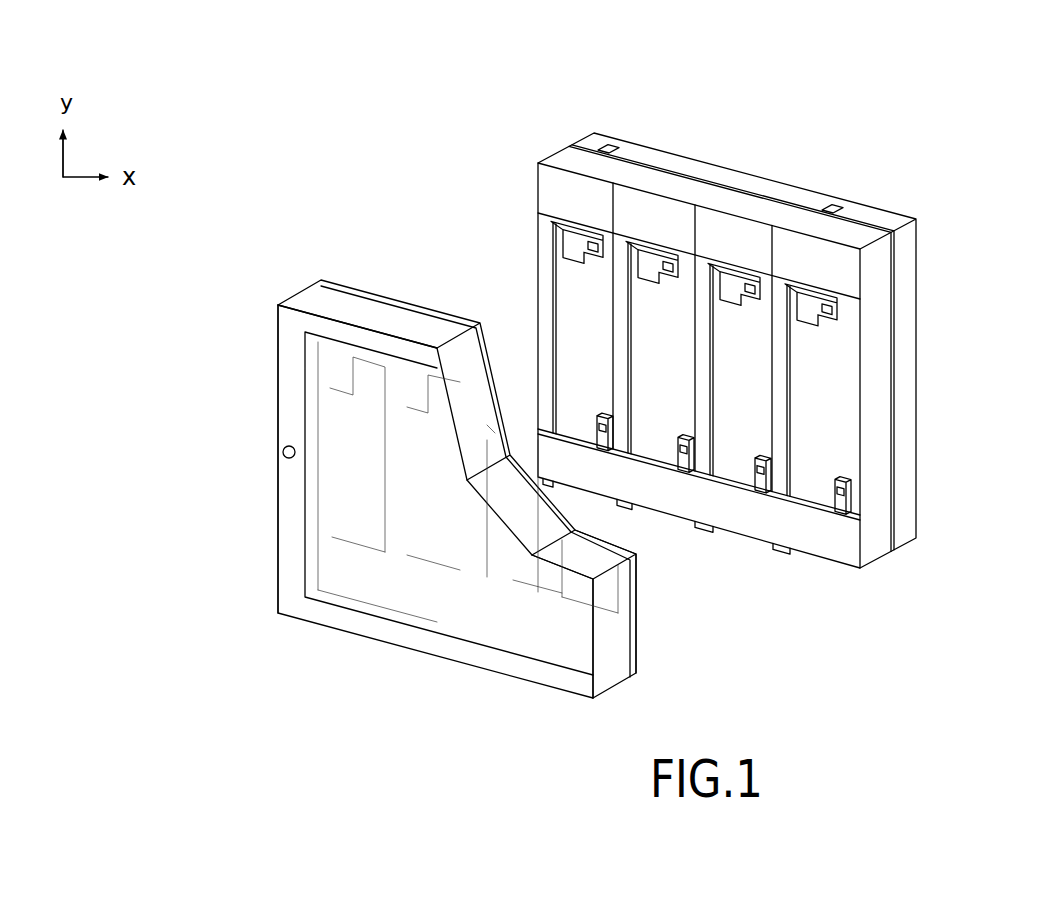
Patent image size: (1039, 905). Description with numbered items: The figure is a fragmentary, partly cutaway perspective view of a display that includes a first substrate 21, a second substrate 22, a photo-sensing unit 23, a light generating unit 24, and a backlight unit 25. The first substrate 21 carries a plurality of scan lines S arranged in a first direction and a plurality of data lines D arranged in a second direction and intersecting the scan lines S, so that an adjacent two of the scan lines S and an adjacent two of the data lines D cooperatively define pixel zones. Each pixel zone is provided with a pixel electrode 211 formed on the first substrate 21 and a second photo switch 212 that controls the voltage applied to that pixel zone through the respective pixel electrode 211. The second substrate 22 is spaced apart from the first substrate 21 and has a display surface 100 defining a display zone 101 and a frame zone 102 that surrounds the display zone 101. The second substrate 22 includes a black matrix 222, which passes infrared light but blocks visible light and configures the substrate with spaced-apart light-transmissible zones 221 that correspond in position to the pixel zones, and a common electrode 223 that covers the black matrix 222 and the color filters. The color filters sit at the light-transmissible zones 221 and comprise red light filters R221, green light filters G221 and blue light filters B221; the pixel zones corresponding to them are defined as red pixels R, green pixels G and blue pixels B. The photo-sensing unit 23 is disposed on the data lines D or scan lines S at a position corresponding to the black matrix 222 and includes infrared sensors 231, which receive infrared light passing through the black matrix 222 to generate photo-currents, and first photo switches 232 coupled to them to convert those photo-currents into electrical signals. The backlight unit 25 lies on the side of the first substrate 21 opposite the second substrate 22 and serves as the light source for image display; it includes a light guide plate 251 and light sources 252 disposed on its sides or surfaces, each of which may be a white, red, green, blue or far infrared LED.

The display surface 100 is at (291, 284).
The first substrate 21 is at (834, 572).
The pixel electrode 211 is at (653, 332).
The second photo switch 212 is at (553, 246).
The second substrate 22 is at (270, 542).
The light-transmissible zone 221 is at (427, 390).
The black matrix 222 is at (560, 628).
The common electrode 223 is at (641, 600).
The photo-sensing unit 23 is at (985, 445).
The infrared sensor 231 is at (780, 465).
The first photo switch 232 is at (846, 508).
The light generating unit 24 is at (286, 460).
The backlight unit 25 is at (784, 130).
The light guide plate 251 is at (886, 221).
The light source 252 is at (828, 201).
The display zone 101 is at (323, 357).
The frame zone 102 is at (293, 435).
The red pixel R is at (603, 283).
The blue pixel B is at (657, 437).
The green pixel G is at (733, 445).
The data line D is at (783, 407).
The scan line S is at (558, 192).
The red light filter R221 is at (358, 520).
The blue light filter B221 is at (427, 548).
The green light filter G221 is at (513, 570).